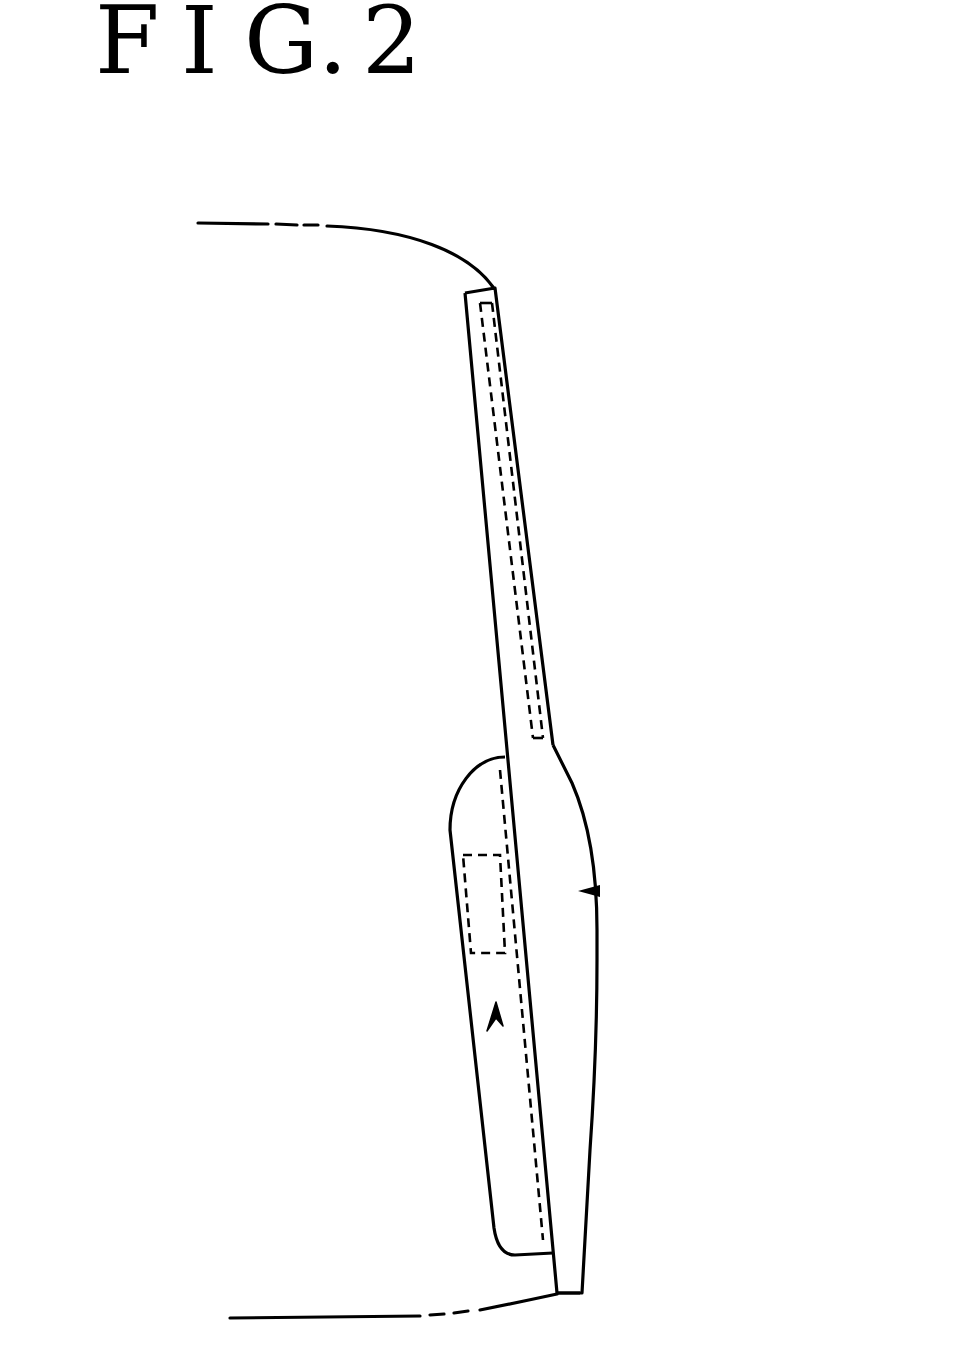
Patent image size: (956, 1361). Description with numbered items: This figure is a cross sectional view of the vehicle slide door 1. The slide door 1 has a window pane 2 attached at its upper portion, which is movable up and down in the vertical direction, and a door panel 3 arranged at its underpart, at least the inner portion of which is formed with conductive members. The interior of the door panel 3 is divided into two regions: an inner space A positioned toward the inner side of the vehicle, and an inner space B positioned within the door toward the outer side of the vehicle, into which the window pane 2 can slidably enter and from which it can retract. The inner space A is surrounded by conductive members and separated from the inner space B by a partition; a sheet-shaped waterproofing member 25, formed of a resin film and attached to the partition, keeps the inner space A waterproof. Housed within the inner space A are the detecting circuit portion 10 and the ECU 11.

The slide door 1 is at (637, 745).
The window pane 2 is at (530, 537).
The door panel 3 is at (597, 1013).
The detecting circuit portion 10 is at (372, 904).
The ECU 11 is at (462, 907).
The waterproofing member 25 is at (533, 1146).
The inner space A is at (492, 1030).
The inner space B is at (600, 891).